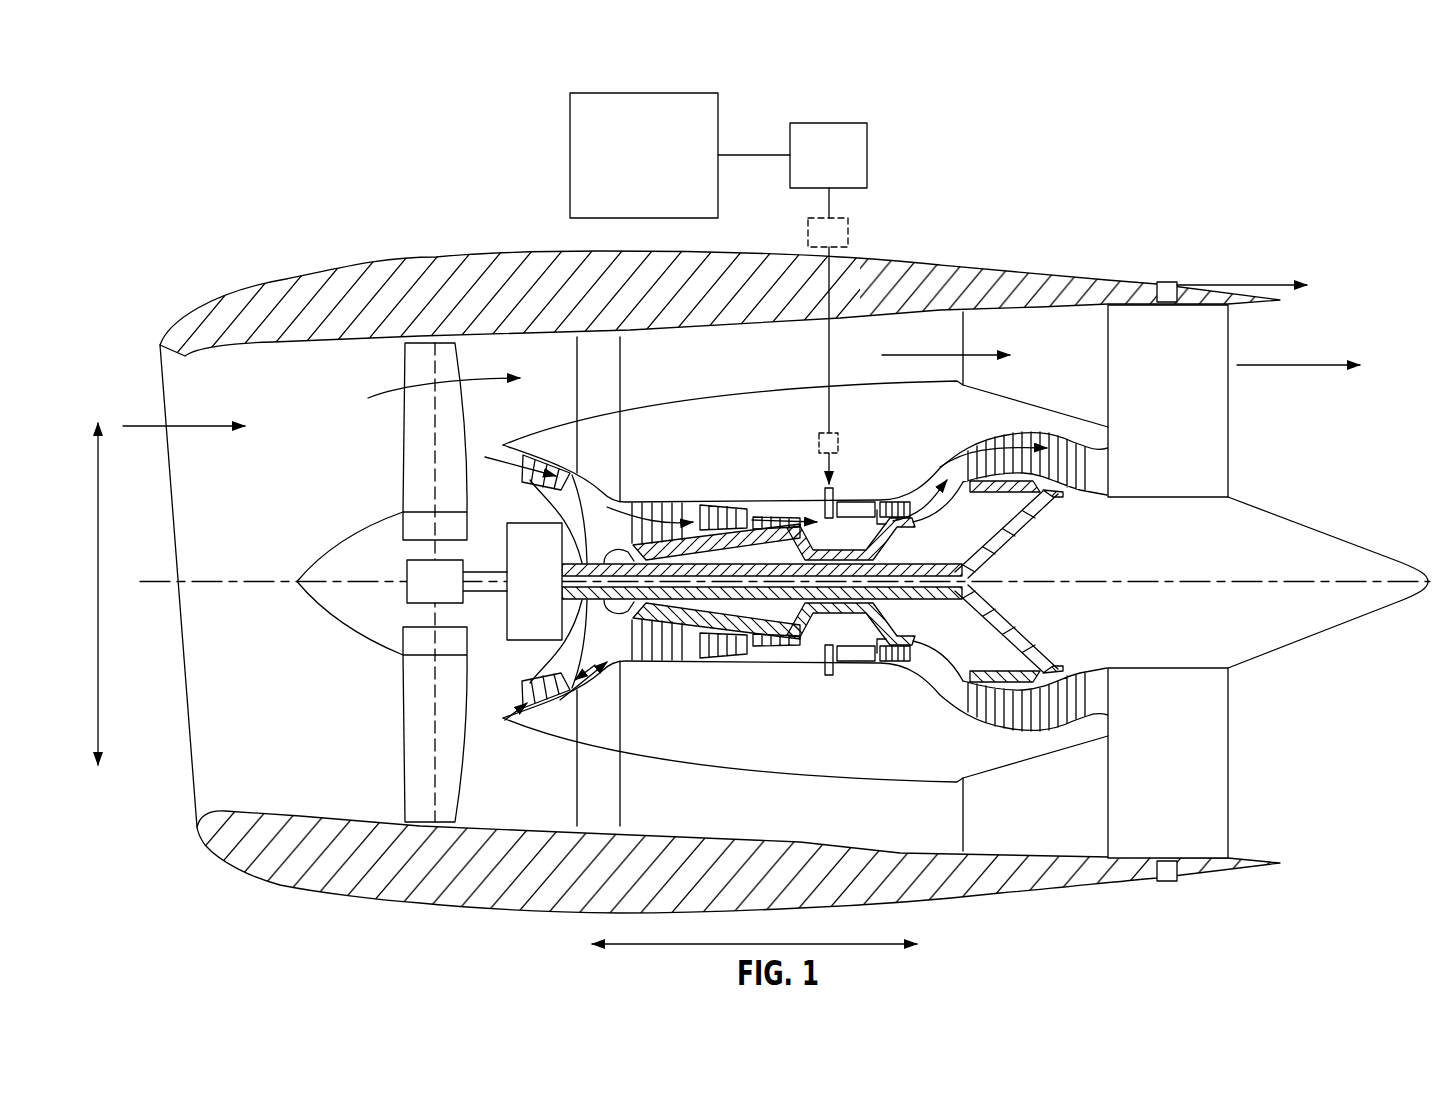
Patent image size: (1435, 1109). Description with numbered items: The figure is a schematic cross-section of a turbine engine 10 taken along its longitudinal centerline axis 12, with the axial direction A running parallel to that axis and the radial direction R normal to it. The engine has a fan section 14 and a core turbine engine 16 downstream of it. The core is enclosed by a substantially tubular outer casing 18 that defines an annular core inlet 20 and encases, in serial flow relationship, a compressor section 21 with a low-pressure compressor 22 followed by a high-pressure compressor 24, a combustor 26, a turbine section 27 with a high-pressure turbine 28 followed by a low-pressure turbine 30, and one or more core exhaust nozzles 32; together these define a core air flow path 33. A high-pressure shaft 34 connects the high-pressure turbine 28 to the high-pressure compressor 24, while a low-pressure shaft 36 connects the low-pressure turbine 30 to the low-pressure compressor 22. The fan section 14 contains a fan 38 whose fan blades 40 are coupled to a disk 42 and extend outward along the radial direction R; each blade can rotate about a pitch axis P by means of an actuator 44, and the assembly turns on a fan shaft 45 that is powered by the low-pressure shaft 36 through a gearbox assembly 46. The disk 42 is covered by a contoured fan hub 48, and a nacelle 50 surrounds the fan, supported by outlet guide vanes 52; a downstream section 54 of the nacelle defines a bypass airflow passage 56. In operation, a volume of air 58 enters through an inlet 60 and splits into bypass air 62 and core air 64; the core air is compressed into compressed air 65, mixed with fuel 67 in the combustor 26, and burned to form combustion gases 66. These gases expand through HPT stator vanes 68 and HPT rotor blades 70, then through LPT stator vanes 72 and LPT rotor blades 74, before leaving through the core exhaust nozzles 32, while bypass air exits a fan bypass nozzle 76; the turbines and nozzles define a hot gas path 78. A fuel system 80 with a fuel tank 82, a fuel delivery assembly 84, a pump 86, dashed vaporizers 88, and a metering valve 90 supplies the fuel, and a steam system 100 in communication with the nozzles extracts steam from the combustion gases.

The turbine engine 10 is at (283, 268).
The longitudinal centerline axis 12 is at (1217, 580).
The fan section 14 is at (373, 360).
The core turbine engine 16 is at (847, 418).
The outer casing 18 is at (800, 772).
The core inlet 20 is at (506, 722).
The compressor section 21 is at (702, 447).
The low-pressure compressor 22 is at (562, 656).
The high-pressure compressor 24 is at (652, 660).
The combustor 26 is at (842, 663).
The turbine section 27 is at (1007, 436).
The high-pressure turbine 28 is at (945, 660).
The low-pressure turbine 30 is at (1050, 735).
The core exhaust nozzles 32 is at (1167, 282).
The core air flow path 33 is at (573, 672).
The high-pressure shaft 34 is at (838, 547).
The low-pressure shaft 36 is at (1000, 537).
The fan 38 is at (292, 708).
The fan blades 40 is at (398, 728).
The disk 42 is at (418, 527).
The actuator 44 is at (405, 592).
The fan shaft 45 is at (476, 571).
The gearbox assembly 46 is at (527, 462).
The fan hub 48 is at (327, 614).
The nacelle 50 is at (420, 897).
The outlet guide vanes 52 is at (623, 395).
The downstream section of the nacelle 54 is at (997, 275).
The bypass airflow passage 56 is at (714, 364).
The volume of air 58 is at (212, 423).
The inlet 60 is at (188, 748).
The bypass air 62 is at (368, 398).
The core air 64 is at (500, 457).
The compressed air 65 is at (682, 505).
The combustion gases 66 is at (905, 495).
The fuel 67 is at (837, 474).
The HPT stator vanes 68 is at (885, 672).
The HPT rotor blades 70 is at (898, 643).
The LPT stator vanes 72 is at (970, 703).
The LPT rotor blades 74 is at (983, 710).
The fan bypass nozzle 76 is at (1247, 407).
The hot gas path 78 is at (962, 413).
The fuel system 80 is at (560, 100).
The fuel tank 82 is at (570, 157).
The fuel delivery assembly 84 is at (833, 382).
The pump 86 is at (868, 150).
The vaporizers 88 is at (849, 236).
The metering valve 90 is at (818, 447).
The steam system 100 is at (1147, 410).
The radial direction R is at (100, 668).
The axial direction A is at (818, 943).
The pitch axis P is at (437, 405).